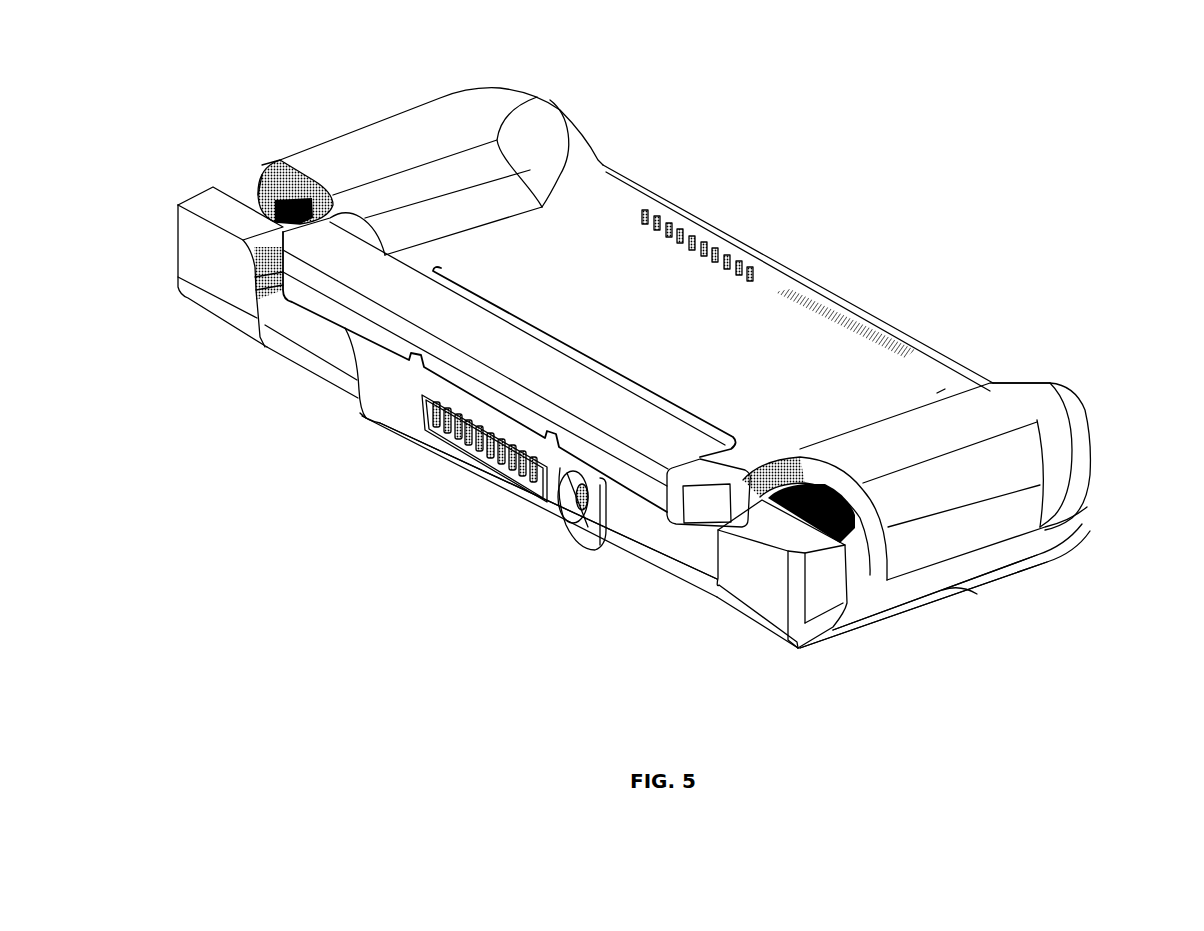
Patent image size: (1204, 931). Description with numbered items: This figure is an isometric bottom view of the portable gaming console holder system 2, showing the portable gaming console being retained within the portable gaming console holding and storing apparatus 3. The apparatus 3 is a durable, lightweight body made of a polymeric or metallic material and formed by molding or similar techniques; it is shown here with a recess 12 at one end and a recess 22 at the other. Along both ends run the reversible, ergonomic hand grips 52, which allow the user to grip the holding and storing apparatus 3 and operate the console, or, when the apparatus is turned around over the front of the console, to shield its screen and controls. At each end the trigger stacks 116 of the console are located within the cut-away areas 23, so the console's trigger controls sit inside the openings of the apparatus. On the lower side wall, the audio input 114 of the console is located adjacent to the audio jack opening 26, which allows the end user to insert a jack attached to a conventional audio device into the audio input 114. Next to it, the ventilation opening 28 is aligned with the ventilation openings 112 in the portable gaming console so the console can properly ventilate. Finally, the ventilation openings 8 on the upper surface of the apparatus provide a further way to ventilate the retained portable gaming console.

The portable gaming console holder system 2 is at (818, 222).
The portable gaming console holding and storing apparatus 3 is at (1105, 492).
The ventilation openings 8 is at (705, 240).
The recess 12 is at (240, 165).
The recess 22 is at (875, 632).
The cut-away areas 23 is at (225, 168).
The audio jack opening 26 is at (553, 542).
The ventilation opening 28 is at (488, 460).
The reversible, ergonomic hand grips 52 is at (485, 110).
The ventilation openings 112 is at (402, 462).
The audio input 114 is at (578, 522).
The trigger stacks 116 is at (220, 277).